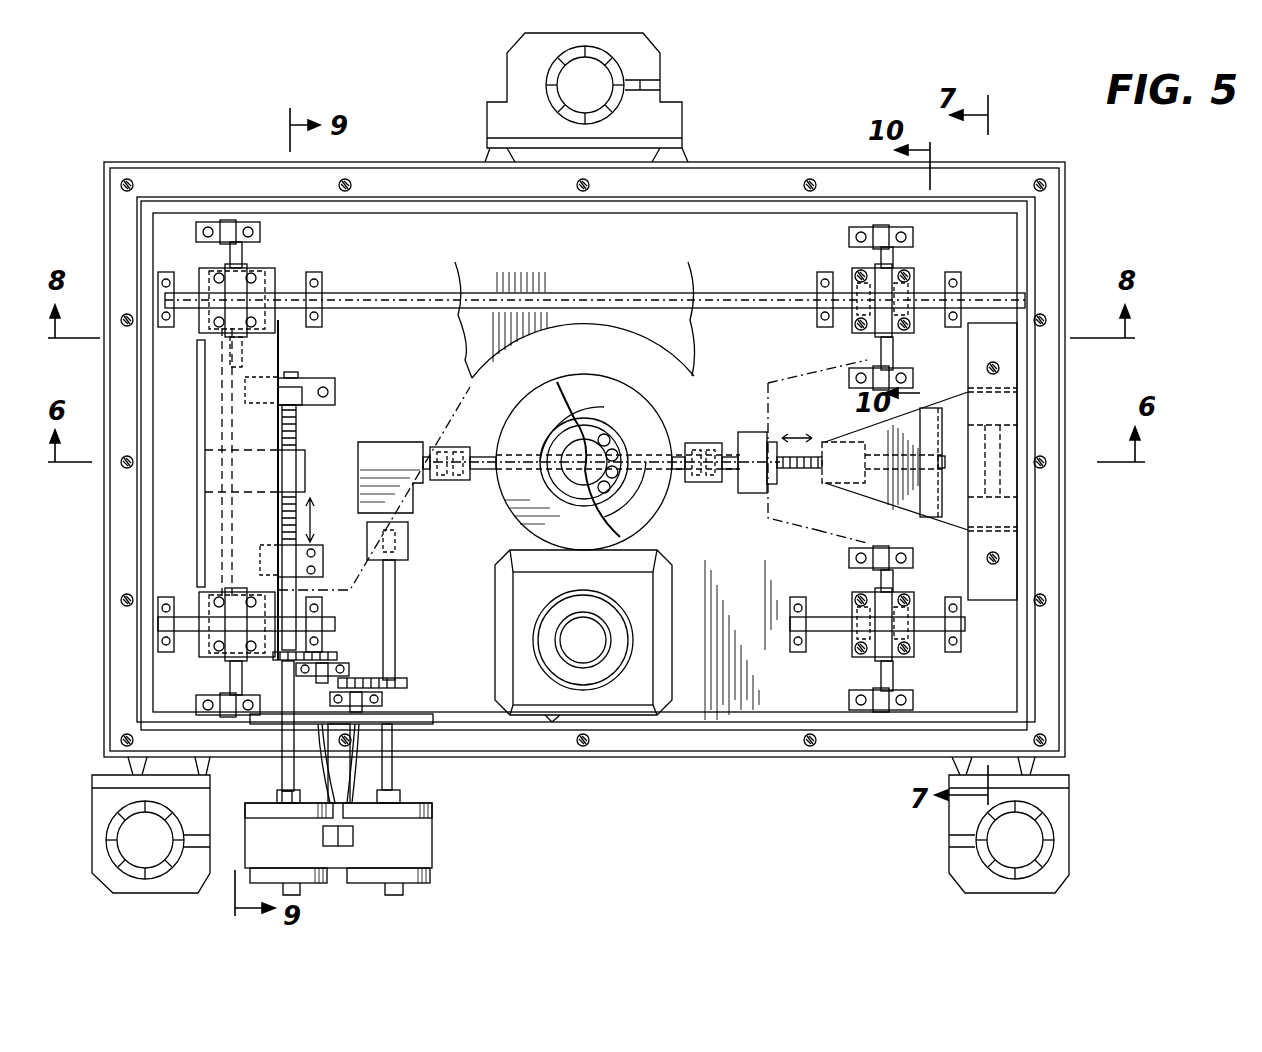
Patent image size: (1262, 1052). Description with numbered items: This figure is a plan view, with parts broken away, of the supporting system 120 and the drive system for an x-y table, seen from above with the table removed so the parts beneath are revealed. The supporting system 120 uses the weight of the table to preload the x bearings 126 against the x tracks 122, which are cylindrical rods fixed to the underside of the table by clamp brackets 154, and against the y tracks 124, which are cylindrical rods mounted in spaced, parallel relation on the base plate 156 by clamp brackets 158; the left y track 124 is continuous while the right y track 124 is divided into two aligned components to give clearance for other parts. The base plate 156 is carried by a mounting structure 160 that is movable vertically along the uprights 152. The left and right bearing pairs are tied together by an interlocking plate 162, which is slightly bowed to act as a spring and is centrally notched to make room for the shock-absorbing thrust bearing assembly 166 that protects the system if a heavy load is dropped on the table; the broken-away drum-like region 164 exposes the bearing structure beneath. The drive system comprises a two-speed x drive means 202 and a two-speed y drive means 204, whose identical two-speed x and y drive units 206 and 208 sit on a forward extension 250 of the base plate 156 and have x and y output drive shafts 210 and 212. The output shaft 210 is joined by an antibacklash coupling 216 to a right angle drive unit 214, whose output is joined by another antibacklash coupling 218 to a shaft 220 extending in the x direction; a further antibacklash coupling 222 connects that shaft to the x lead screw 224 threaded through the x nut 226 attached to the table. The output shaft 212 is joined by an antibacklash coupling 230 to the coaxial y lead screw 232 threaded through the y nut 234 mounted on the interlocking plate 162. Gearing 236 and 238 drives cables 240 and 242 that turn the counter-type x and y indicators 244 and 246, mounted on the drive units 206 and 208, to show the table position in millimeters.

The supporting system 120 is at (680, 296).
The x tracks 122 is at (420, 300).
The y tracks 124 is at (250, 262).
The x bearings 126 is at (262, 292).
The uprights 152 is at (553, 75).
The clamp brackets 154 is at (350, 285).
The base plate 156 is at (718, 680).
The clamp brackets 158 is at (912, 235).
The mounting structure 160 is at (1080, 782).
The interlocking plate 162 is at (650, 296).
The drum rim 164 is at (538, 338).
The shock-absorbing thrust bearing assembly 166 is at (515, 508).
The x drive means 202 is at (410, 440).
The y drive means 204 is at (310, 455).
The x drive unit 206 is at (432, 875).
The y drive unit 208 is at (312, 884).
The x output drive shaft 210 is at (395, 780).
The y output drive shaft 212 is at (285, 775).
The right angle drive unit 214 is at (375, 445).
The antibacklash coupling 216 is at (405, 540).
The antibacklash coupling 218 is at (452, 450).
The shaft 220 is at (690, 430).
The antibacklash coupling 222 is at (690, 485).
The x lead screw 224 is at (790, 470).
The x nut 226 is at (830, 500).
The antibacklash coupling 230 is at (245, 585).
The y lead screw 232 is at (282, 425).
The y nut 234 is at (313, 470).
The gearing 236 is at (407, 683).
The gearing 238 is at (340, 655).
The cable 240 is at (400, 800).
The cable 242 is at (330, 790).
The x indicator 244 is at (353, 836).
The y indicator 246 is at (323, 838).
The forward extension 250 is at (420, 803).